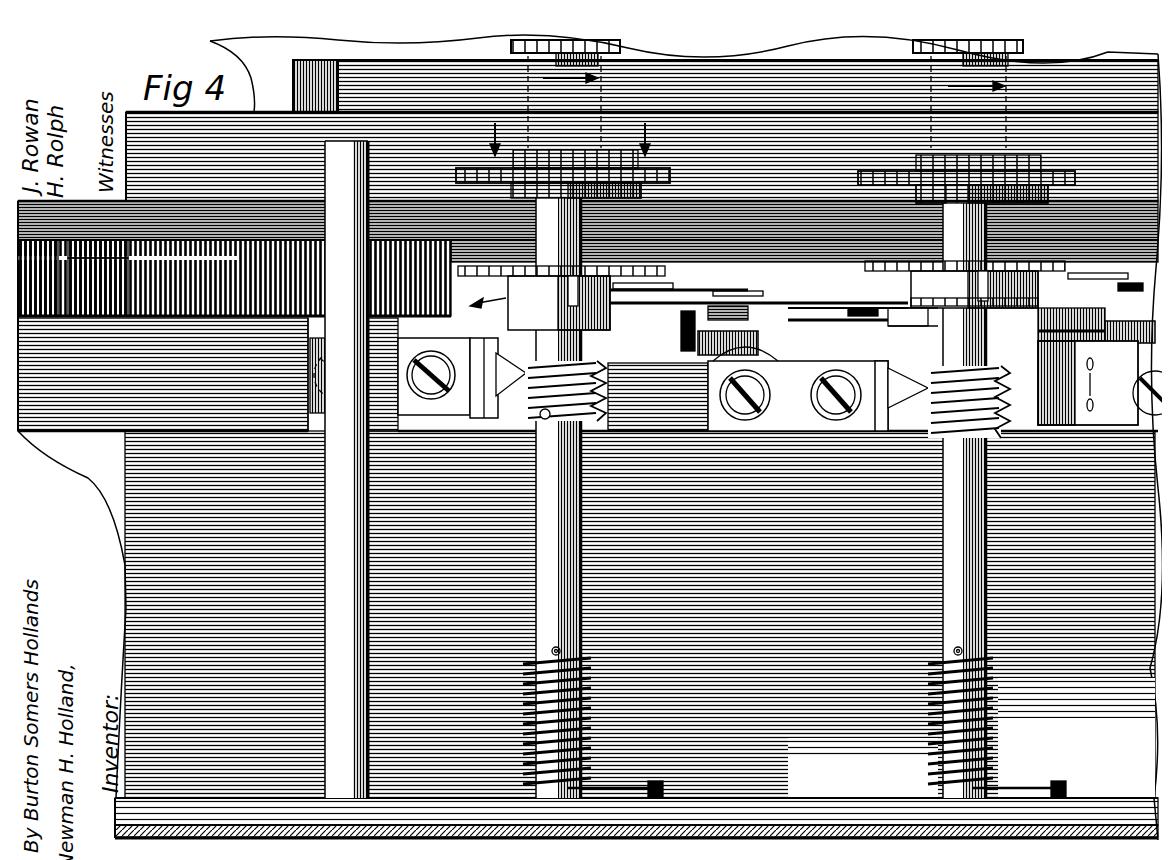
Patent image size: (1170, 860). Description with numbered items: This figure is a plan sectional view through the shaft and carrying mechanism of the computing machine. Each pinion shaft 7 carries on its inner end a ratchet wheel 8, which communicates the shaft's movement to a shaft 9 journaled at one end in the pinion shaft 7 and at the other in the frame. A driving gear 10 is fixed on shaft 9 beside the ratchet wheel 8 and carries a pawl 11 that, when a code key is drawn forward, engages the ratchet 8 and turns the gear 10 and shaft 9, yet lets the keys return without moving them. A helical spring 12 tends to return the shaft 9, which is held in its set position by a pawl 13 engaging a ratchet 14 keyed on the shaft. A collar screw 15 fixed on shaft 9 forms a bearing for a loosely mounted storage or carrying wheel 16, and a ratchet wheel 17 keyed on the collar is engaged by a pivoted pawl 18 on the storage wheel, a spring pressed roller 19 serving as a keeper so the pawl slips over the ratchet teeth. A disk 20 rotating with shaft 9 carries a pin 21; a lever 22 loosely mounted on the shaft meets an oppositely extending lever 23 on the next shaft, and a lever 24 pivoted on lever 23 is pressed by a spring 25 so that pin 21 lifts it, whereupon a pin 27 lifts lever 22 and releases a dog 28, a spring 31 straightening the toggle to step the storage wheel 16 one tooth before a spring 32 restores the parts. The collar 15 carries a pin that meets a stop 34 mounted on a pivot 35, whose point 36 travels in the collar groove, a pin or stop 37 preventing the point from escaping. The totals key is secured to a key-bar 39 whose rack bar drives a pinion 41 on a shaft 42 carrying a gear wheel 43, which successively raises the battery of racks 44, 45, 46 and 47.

The pinion shaft 7 is at (620, 45).
The ratchet wheel 8 is at (930, 150).
The shaft 9 is at (750, 633).
The driving gear 10 is at (662, 172).
The pawl 11 is at (630, 153).
The helical spring 12 is at (585, 690).
The pawl 13 is at (633, 186).
The ratchet 14 is at (908, 188).
The collar screw 15 is at (618, 328).
The storage or carrying wheel 16 is at (699, 322).
The ratchet wheel 17 is at (912, 320).
The pivoted pawl 18 is at (1030, 340).
The spring pressed wheel or roller 19 is at (1071, 323).
The disk 20 is at (1064, 250).
The pin 21 is at (605, 280).
The lever 22 is at (903, 292).
The lever 23 is at (845, 300).
The lever 24 is at (665, 290).
The spring 25 is at (931, 273).
The pin 27 is at (660, 308).
The dog 28 is at (850, 315).
The spring 31 is at (848, 329).
The spring 32 is at (692, 335).
The stop 34 is at (699, 384).
The pivot 35 is at (639, 384).
The point 36 is at (524, 358).
The pin or stop 37 is at (537, 412).
The key-bar 39 is at (725, 86).
The pinion 41 is at (286, 84).
The shaft 42 is at (346, 469).
The gear wheel 43 is at (268, 312).
The rack 44 is at (234, 279).
The rack 45 is at (60, 285).
The rack 46 is at (60, 262).
The rack 47 is at (34, 278).